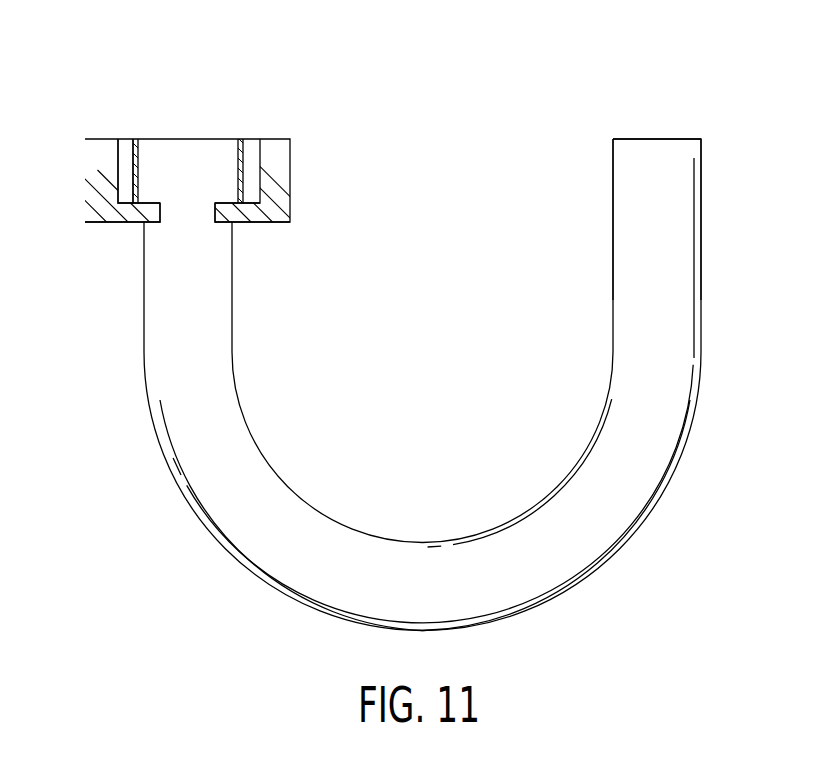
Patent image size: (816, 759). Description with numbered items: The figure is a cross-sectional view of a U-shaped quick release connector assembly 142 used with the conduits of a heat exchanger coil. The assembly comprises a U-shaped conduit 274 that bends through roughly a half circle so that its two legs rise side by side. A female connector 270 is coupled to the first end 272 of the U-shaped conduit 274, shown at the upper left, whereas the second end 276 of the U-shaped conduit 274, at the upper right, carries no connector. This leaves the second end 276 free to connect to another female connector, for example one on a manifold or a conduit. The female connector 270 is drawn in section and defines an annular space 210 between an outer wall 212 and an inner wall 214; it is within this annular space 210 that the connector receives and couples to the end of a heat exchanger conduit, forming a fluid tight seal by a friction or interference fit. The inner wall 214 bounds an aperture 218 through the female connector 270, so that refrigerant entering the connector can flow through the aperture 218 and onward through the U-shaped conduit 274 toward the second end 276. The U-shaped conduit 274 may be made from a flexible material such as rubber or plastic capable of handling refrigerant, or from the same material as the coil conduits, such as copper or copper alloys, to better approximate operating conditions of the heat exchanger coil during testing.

The quick release connector assembly 142 is at (470, 52).
The annular space 210 is at (128, 152).
The outer wall 212 is at (98, 193).
The inner wall 214 is at (138, 170).
The aperture 218 is at (185, 207).
The female connector 270 is at (260, 249).
The first end 272 is at (115, 248).
The U-shaped conduit 274 is at (267, 582).
The second end 276 is at (735, 152).